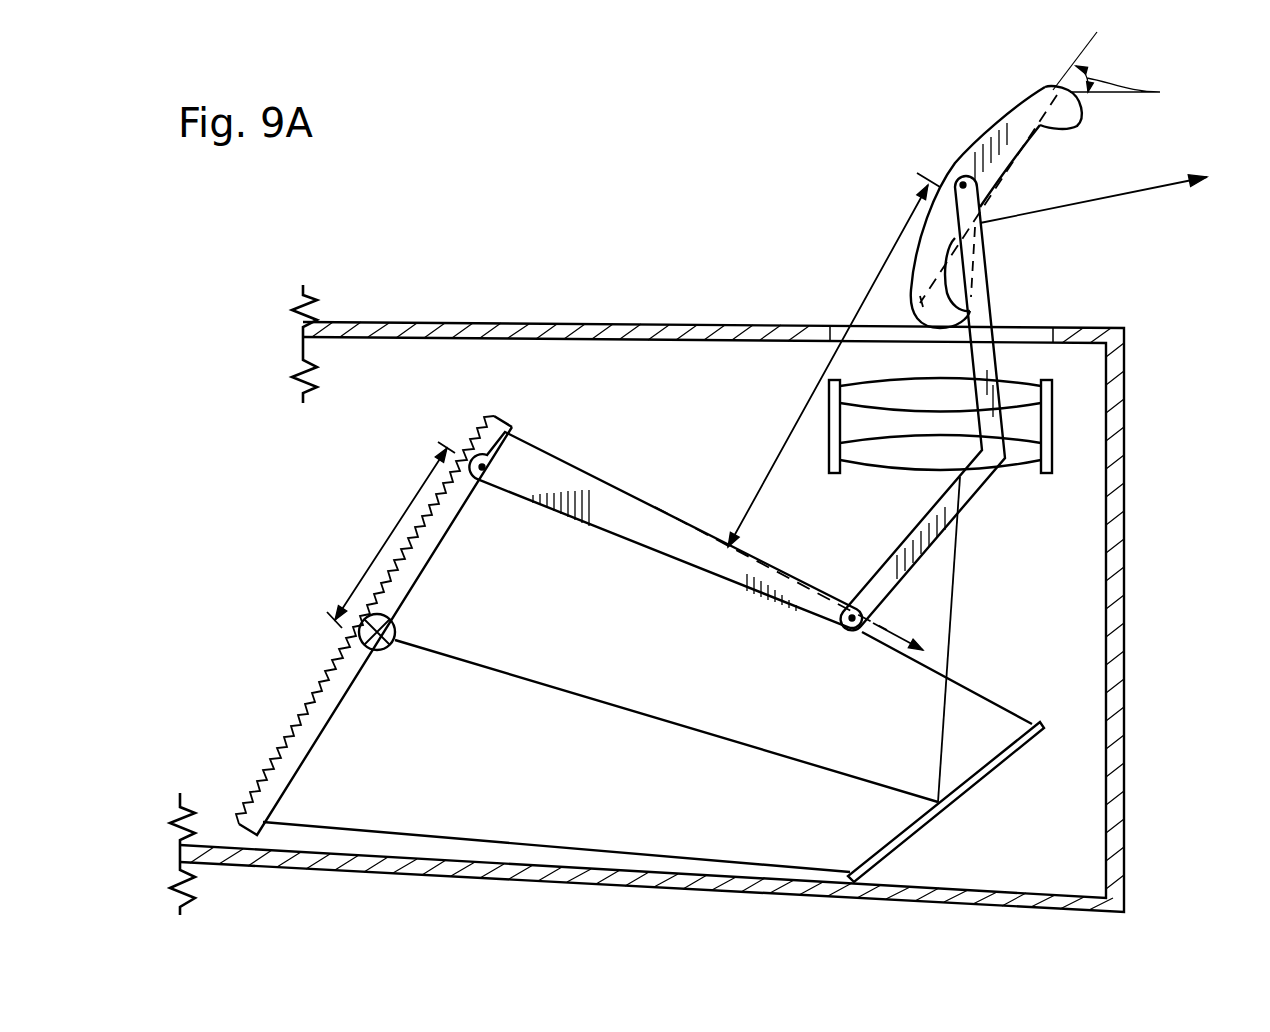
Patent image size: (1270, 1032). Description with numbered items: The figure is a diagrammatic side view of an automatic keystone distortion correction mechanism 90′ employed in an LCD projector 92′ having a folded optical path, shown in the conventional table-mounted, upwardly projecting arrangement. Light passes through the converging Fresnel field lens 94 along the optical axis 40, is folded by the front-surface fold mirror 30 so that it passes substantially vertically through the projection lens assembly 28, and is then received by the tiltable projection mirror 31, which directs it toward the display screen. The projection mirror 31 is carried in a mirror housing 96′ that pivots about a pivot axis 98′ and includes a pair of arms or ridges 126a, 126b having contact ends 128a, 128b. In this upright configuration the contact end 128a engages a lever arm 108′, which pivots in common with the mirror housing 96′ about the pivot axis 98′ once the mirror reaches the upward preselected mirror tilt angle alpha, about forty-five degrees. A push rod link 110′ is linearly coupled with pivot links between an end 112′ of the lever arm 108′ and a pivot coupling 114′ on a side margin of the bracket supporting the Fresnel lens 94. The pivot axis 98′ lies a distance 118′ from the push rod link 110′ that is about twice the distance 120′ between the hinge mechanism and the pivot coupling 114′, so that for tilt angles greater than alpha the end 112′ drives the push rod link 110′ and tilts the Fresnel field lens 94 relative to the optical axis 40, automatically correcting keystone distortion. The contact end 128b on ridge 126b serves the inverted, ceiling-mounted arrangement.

The LCD projector 92′ is at (481, 310).
The automatic keystone distortion correction mechanism 90′ is at (662, 415).
The converging Fresnel field lens 94 is at (427, 566).
The distance between hinge mechanism and pivot coupling 120′ is at (390, 534).
The optical axis 40 is at (605, 700).
The front-surface fold mirror 30 is at (983, 777).
The push rod link 110′ is at (677, 560).
The pivot coupling 114′ is at (481, 474).
The end of lever arm 112′ is at (848, 626).
The distance from pivot axis to push rod link 118′ is at (806, 402).
The projection lens assembly 28 is at (1064, 406).
The lever arm 108′ is at (983, 258).
The pivot axis 98′ is at (958, 170).
The mirror housing 96′ is at (1007, 130).
The projection mirror 31 is at (1018, 168).
The ridge 126a is at (937, 323).
The contact end 128a is at (975, 298).
The ridge 126b is at (1083, 108).
The contact end 128b is at (1080, 130).
The preselected mirror tilt angle alpha is at (1153, 84).